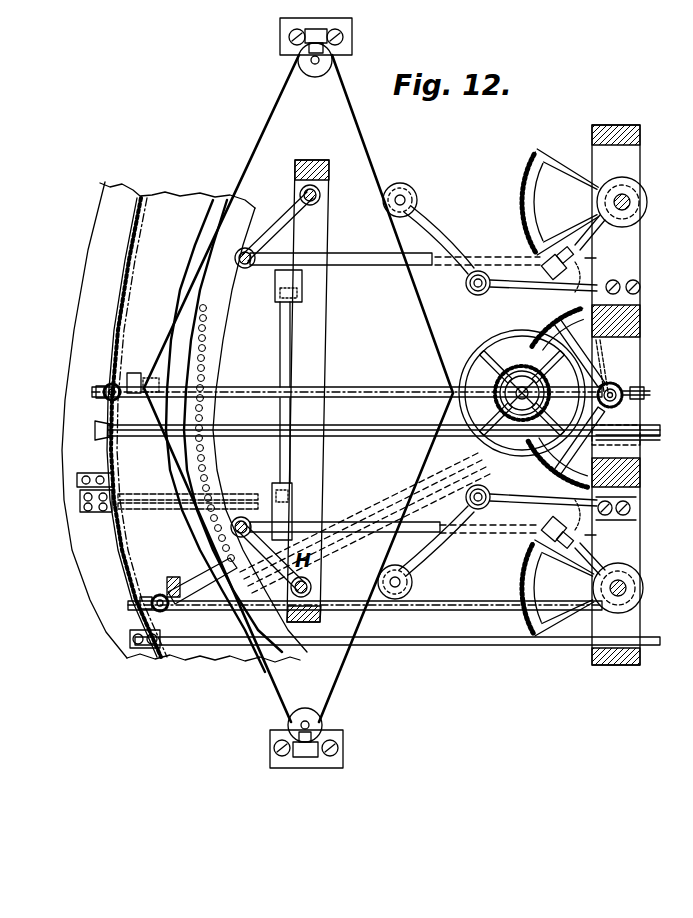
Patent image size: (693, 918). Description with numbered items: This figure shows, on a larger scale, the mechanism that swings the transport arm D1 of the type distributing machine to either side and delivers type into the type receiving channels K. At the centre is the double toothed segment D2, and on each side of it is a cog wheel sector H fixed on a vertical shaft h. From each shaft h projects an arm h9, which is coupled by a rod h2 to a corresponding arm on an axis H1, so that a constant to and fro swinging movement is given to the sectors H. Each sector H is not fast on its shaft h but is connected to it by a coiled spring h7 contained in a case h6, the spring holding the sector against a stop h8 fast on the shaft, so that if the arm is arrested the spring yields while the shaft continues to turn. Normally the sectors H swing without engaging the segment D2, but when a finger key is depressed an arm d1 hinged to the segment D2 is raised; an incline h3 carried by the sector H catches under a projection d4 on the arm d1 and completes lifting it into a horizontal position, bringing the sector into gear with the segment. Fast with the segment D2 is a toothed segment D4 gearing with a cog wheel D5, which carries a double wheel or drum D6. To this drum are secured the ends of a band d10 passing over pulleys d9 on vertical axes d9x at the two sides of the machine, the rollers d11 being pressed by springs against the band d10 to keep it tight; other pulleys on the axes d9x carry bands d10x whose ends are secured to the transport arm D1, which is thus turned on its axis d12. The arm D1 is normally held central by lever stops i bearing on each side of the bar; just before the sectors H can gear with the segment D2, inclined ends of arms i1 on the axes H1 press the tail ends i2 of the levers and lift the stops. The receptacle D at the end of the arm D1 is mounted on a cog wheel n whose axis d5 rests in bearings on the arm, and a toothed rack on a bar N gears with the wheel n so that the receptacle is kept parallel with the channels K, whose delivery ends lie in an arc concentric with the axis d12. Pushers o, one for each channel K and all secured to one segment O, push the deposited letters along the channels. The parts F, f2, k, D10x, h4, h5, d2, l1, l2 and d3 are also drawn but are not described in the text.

The vertical axis d9x is at (322, 62).
The pulley d9 is at (316, 78).
The band d10x is at (262, 145).
The band d10 is at (368, 152).
The rollers d11 is at (414, 190).
The arms i1 is at (270, 225).
The axes H1 is at (312, 205).
The rods h2 is at (348, 252).
The tail ends i2 is at (296, 280).
The lever stops i is at (279, 375).
The transport arm D1 is at (362, 379).
The bar N is at (148, 372).
The curved guide F is at (184, 427).
The perforations f2 is at (208, 470).
The type receiving channels K is at (377, 524).
The rod k is at (161, 531).
The segment O is at (112, 548).
The pushers o is at (112, 477).
The cog wheel n is at (118, 398).
The receptacle D is at (128, 603).
The link D10x is at (200, 527).
The double toothed segment D2 is at (552, 332).
The toothed segment D4 is at (565, 328).
The cog wheel D5 is at (512, 362).
The double wheel or drum D6 is at (520, 450).
The incline h3 is at (560, 277).
The vertical shafts h is at (632, 195).
The case h6 is at (642, 215).
The stop h8 is at (595, 411).
The coiled spring h7 is at (577, 396).
The arms h9 is at (595, 399).
The pin h4 is at (593, 400).
The stop h5 is at (563, 397).
The cog wheel sectors H is at (560, 392).
The arms d1 is at (612, 382).
The axis d12 is at (618, 366).
The shaft d2 is at (640, 385).
The collar l1 is at (645, 389).
The collar l2 is at (626, 426).
The screw d3 is at (632, 500).
The projection d4 is at (630, 512).
The axis d5 is at (624, 280).